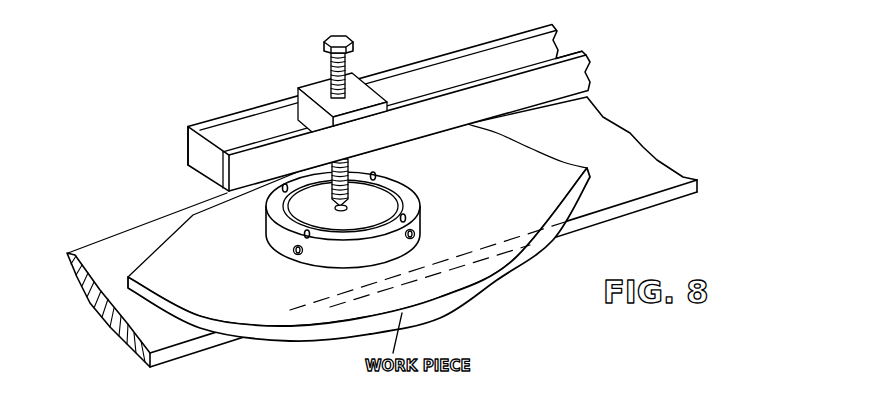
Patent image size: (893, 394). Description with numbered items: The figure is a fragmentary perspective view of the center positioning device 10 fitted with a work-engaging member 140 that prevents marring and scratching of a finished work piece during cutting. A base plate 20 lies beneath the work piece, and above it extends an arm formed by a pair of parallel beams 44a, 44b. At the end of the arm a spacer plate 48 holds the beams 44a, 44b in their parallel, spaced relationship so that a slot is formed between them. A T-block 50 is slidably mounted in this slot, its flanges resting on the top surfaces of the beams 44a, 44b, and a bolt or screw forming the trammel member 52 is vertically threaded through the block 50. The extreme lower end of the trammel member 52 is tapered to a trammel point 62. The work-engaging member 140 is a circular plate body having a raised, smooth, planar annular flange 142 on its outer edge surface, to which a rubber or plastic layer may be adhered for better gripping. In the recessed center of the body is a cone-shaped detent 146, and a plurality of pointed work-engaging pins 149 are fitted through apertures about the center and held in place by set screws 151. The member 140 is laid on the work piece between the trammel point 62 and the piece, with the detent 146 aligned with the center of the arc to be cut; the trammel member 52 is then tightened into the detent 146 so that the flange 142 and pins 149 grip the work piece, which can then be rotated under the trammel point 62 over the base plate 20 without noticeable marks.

The clamping fixture assembly 10 is at (647, 139).
The base plate 20 is at (642, 186).
The beam 44a is at (463, 52).
The beam 44b is at (583, 69).
The spacer plate 48 is at (204, 156).
The T-block 50 is at (362, 98).
The trammel member 52 is at (328, 41).
The trammel point 62 is at (352, 203).
The work-engaging member 140 is at (341, 236).
The annular flange 142 is at (344, 243).
The cone-shaped detent 146 is at (296, 221).
The work-engaging pins 149 is at (283, 190).
The set screws 151 is at (299, 257).